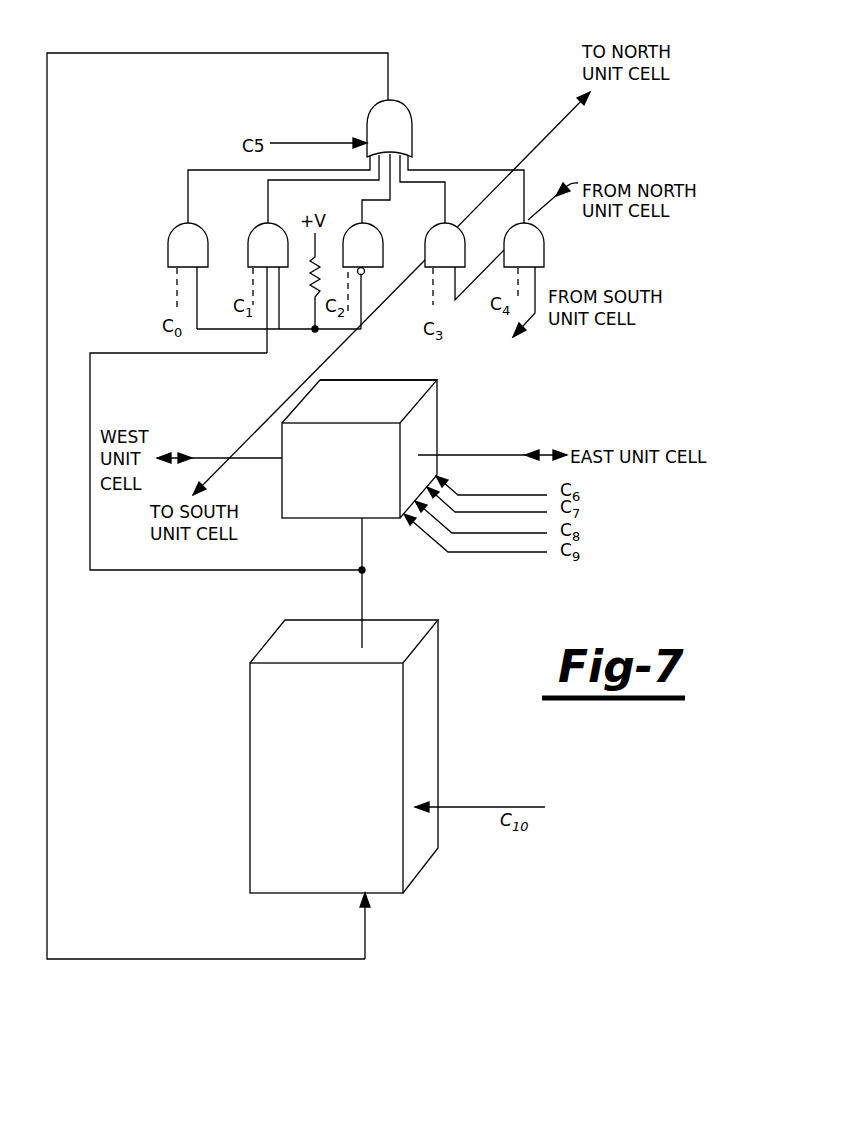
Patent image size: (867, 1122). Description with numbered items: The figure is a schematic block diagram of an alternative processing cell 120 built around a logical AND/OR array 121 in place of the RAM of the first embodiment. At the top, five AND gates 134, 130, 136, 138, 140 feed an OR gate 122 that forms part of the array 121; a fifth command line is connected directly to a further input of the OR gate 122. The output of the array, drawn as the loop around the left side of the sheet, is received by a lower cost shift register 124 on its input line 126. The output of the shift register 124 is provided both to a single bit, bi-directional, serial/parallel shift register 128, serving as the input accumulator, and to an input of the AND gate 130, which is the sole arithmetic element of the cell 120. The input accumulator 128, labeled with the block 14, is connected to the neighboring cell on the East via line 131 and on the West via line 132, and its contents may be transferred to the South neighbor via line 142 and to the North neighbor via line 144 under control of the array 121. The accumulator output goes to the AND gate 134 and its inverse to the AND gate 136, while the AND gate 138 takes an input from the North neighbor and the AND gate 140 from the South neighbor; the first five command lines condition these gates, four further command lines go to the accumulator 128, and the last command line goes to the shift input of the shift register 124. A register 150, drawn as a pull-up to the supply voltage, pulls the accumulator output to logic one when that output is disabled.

The unit cell logic block 14 is at (349, 485).
The alternative processing cell 120 is at (480, 434).
The logical AND/OR array 121 is at (487, 130).
The OR gate 122 is at (397, 117).
The shift register 124 is at (427, 660).
The input line 126 is at (365, 925).
The single bit, bi-directional, serial/parallel shift register (input accumulator) 128 is at (423, 412).
The AND gate 130 is at (252, 228).
The line 131 is at (487, 455).
The line 132 is at (202, 458).
The AND gate 134 is at (170, 235).
The AND gate 136 is at (381, 247).
The AND gate 138 is at (466, 248).
The AND gate 140 is at (544, 232).
The line 142 is at (213, 473).
The line 144 is at (562, 123).
The register 150 is at (318, 247).